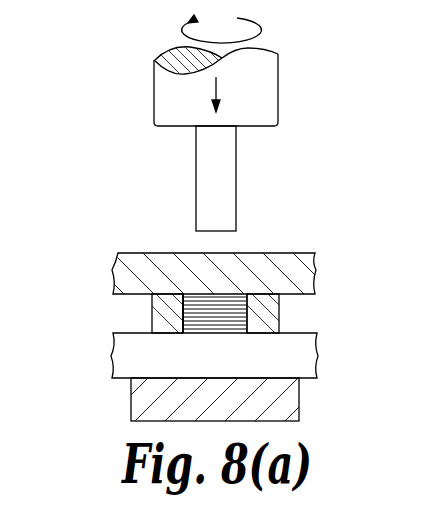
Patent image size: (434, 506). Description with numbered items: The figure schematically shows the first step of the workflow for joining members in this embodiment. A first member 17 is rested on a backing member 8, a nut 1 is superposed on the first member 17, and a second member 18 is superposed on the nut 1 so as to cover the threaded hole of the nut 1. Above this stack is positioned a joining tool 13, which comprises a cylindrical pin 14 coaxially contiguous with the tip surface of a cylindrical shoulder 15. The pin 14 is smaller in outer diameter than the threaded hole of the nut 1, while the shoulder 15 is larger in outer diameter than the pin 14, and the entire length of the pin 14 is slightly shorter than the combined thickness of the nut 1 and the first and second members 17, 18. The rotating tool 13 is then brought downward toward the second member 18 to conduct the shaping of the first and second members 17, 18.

The joining tool 13 is at (208, 123).
The cylindrical shoulder 15 is at (280, 72).
The cylindrical pin 14 is at (232, 179).
The second member 18 is at (313, 275).
The nut 1 is at (280, 308).
The first member 17 is at (116, 360).
The backing member 8 is at (300, 402).